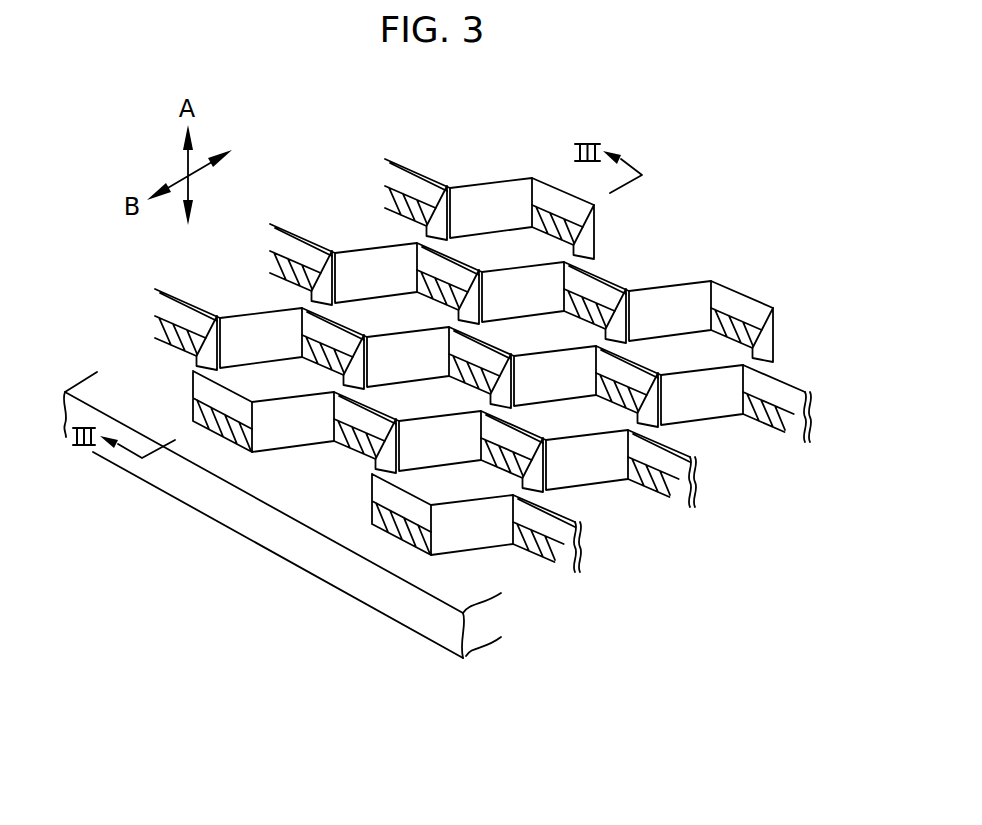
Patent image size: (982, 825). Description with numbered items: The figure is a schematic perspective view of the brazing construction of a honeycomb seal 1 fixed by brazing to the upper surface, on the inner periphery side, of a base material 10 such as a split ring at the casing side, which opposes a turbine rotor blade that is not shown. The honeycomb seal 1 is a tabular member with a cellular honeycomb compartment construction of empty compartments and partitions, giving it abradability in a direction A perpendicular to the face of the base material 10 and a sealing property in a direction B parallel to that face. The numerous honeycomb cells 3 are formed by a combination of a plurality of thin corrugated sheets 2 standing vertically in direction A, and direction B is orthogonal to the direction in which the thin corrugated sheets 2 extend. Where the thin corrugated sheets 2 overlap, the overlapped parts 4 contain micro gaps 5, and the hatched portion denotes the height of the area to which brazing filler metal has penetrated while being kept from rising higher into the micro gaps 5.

The honeycomb seal 1 is at (498, 384).
The thin corrugated sheet 2 is at (745, 295).
The cell 3 is at (493, 242).
The overlapped part 4 is at (622, 270).
The micro gap 5 is at (618, 266).
The base material 10 is at (363, 593).